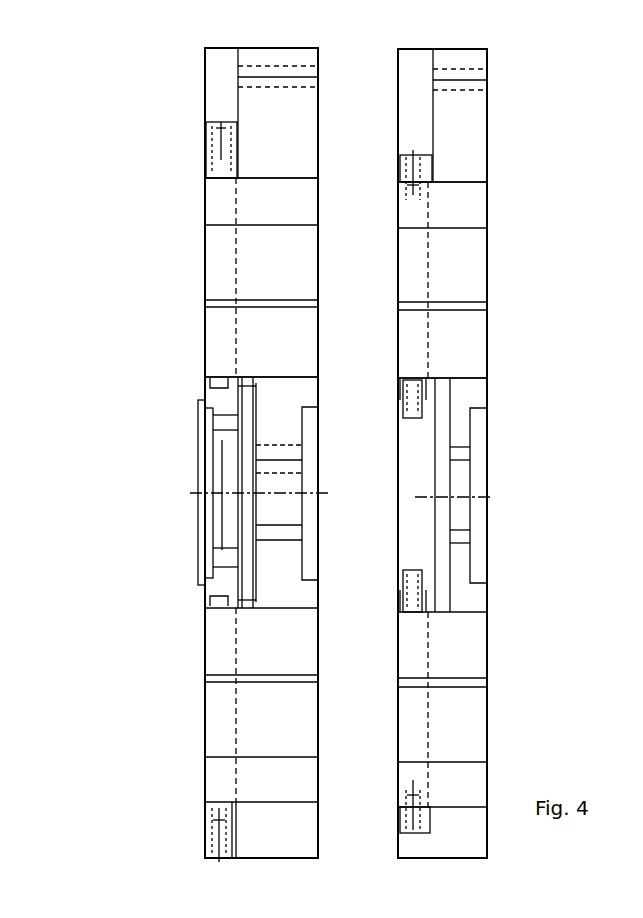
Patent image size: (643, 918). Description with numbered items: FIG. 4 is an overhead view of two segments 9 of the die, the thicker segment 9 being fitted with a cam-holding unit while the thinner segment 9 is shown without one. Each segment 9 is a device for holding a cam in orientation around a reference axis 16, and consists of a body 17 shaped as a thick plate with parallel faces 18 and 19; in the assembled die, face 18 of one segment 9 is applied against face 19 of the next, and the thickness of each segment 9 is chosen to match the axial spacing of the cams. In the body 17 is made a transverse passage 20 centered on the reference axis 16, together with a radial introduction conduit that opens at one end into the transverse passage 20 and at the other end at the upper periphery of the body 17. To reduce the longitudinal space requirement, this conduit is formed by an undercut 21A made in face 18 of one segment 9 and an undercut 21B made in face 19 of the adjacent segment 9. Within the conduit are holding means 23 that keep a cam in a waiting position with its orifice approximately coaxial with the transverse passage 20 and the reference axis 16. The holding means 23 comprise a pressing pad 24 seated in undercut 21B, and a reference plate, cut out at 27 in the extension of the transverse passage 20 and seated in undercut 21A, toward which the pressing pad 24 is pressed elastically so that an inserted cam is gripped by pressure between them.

The segment 9 is at (163, 127).
The reference axis 16 is at (270, 490).
The body 17 is at (470, 145).
The face 18 is at (205, 318).
The face 19 is at (318, 215).
The transverse passage 20 is at (460, 475).
The undercut 21A is at (420, 530).
The undercut 21B is at (308, 545).
The holding means 23 is at (231, 483).
The pressing pad 24 is at (203, 442).
The cut-out 27 is at (248, 470).